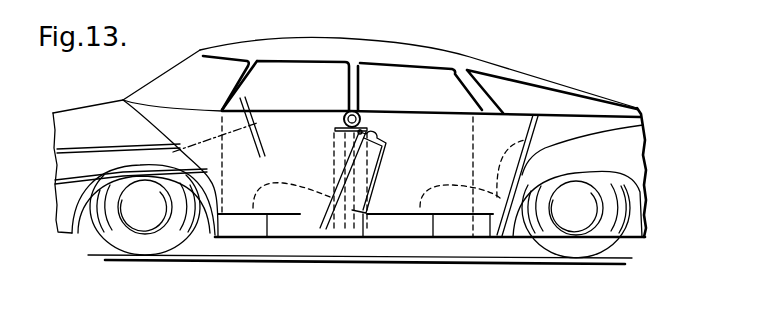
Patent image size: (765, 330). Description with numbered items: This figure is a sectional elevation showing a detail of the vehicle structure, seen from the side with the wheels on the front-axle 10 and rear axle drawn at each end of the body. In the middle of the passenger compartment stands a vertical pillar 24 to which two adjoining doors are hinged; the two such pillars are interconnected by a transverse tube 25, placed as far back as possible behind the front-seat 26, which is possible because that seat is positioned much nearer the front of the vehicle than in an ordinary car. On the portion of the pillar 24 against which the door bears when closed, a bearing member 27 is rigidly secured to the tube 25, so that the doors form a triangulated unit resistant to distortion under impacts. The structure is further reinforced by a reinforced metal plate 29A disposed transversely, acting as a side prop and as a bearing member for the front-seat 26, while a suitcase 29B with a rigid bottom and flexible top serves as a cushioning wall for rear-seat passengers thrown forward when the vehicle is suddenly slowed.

The front-axle 10 is at (143, 215).
The vertical pillar 24 is at (350, 222).
The transverse tube 25 is at (358, 131).
The front-seat 26 is at (297, 198).
The bearing member 27 is at (345, 111).
The reinforced metal plate 29A is at (343, 173).
The suitcase 29B is at (358, 177).